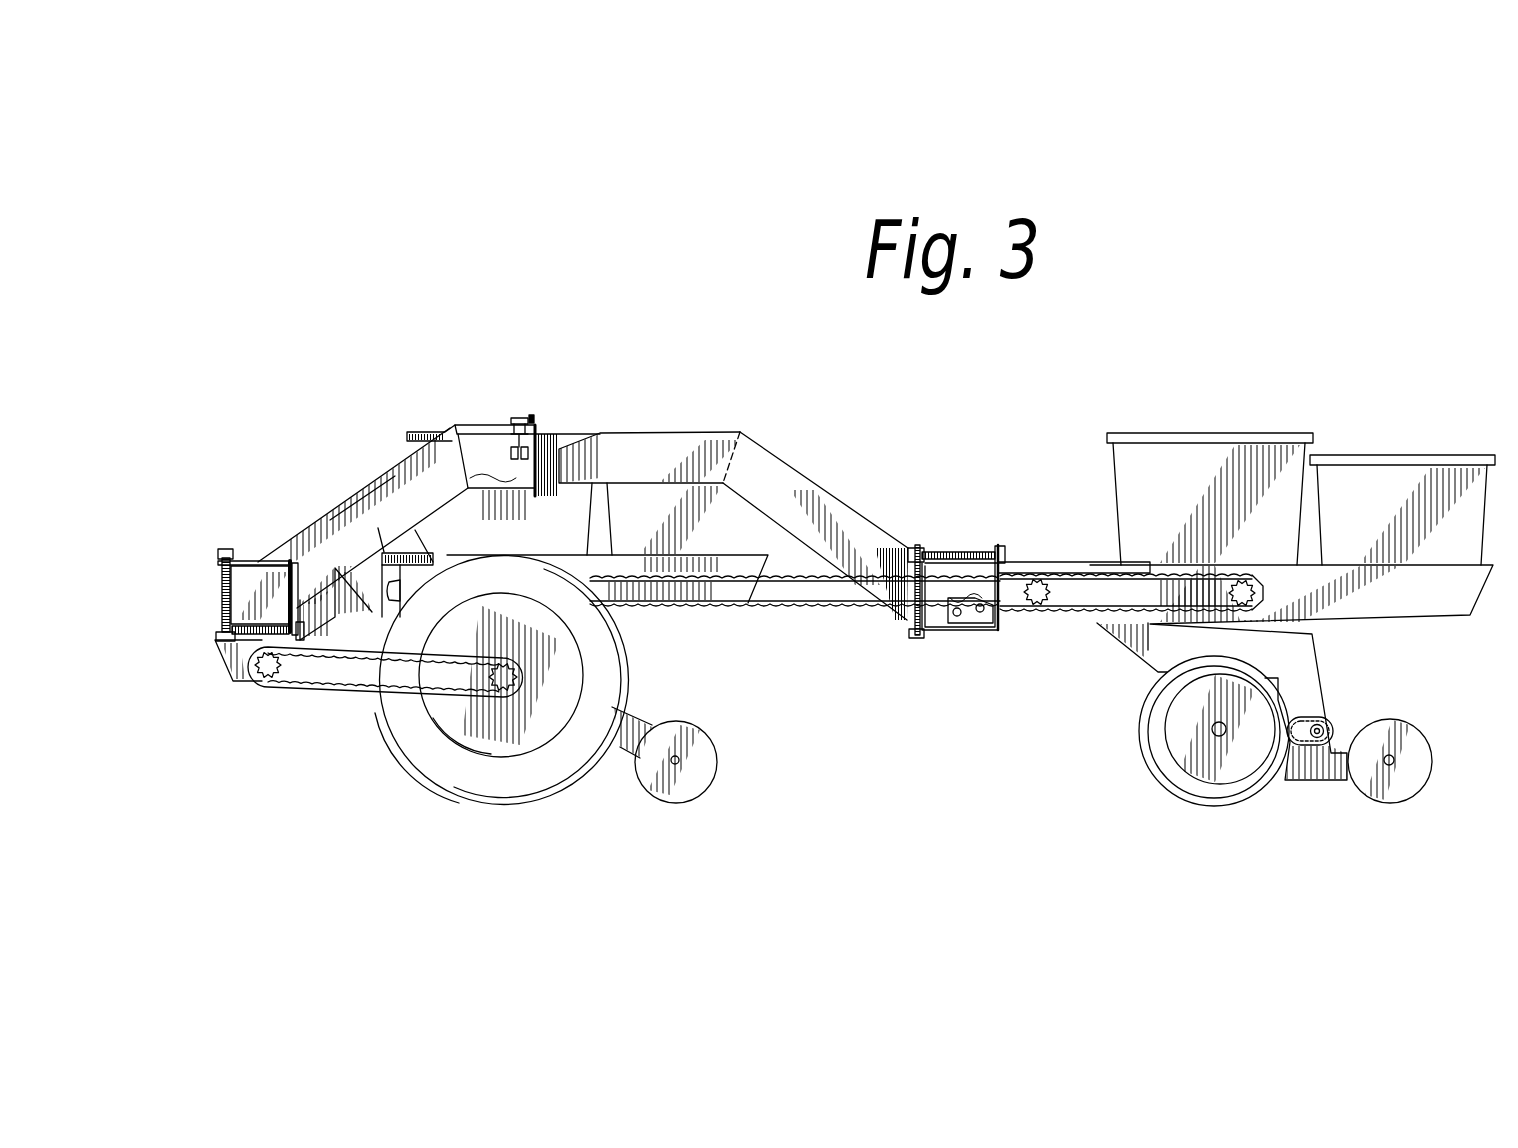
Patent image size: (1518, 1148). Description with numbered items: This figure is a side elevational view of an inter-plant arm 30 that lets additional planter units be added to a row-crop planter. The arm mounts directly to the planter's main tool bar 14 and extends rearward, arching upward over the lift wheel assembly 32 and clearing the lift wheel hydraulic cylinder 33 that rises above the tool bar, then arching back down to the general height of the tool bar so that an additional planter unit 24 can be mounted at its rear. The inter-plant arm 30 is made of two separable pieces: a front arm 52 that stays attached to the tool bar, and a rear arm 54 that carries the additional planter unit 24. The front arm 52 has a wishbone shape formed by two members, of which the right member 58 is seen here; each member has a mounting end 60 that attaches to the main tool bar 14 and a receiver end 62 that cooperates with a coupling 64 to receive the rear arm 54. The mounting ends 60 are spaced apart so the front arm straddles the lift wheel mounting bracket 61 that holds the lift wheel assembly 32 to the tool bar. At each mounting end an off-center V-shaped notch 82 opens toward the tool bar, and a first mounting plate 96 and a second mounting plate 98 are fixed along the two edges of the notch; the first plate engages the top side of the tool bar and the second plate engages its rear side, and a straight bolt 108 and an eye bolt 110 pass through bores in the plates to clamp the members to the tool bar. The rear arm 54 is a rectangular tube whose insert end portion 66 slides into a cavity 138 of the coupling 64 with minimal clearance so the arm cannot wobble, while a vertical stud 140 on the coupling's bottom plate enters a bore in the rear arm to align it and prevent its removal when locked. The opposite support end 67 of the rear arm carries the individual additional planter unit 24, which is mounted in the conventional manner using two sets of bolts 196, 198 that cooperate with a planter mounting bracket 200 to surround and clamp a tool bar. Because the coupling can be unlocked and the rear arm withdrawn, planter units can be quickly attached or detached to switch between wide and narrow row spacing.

The main tool bar 14 is at (253, 560).
The additional planter unit 24 is at (1179, 428).
The inter-plant arm 30 is at (494, 410).
The lift wheel assembly 32 is at (370, 746).
The lift wheel hydraulic cylinder 33 is at (409, 448).
The front arm 52 is at (424, 470).
The rear arm 54 is at (800, 500).
The right member 58 is at (283, 542).
The mounting end 60 is at (287, 548).
The lift wheel mounting bracket 61 is at (232, 663).
The receiver end 62 is at (538, 418).
The coupling 64 is at (466, 426).
The insert end portion 66 is at (620, 444).
The support end 67 is at (915, 545).
The V-shaped notch 82 is at (294, 553).
The first mounting plate 96 is at (225, 558).
The second mounting plate 98 is at (312, 645).
The straight bolt 108 is at (225, 578).
The eye bolt 110 is at (250, 682).
The cavity 138 is at (508, 472).
The stud 140 is at (535, 487).
The bolts 196 is at (965, 548).
The bolts 198 is at (945, 633).
The planter mounting bracket 200 is at (976, 634).